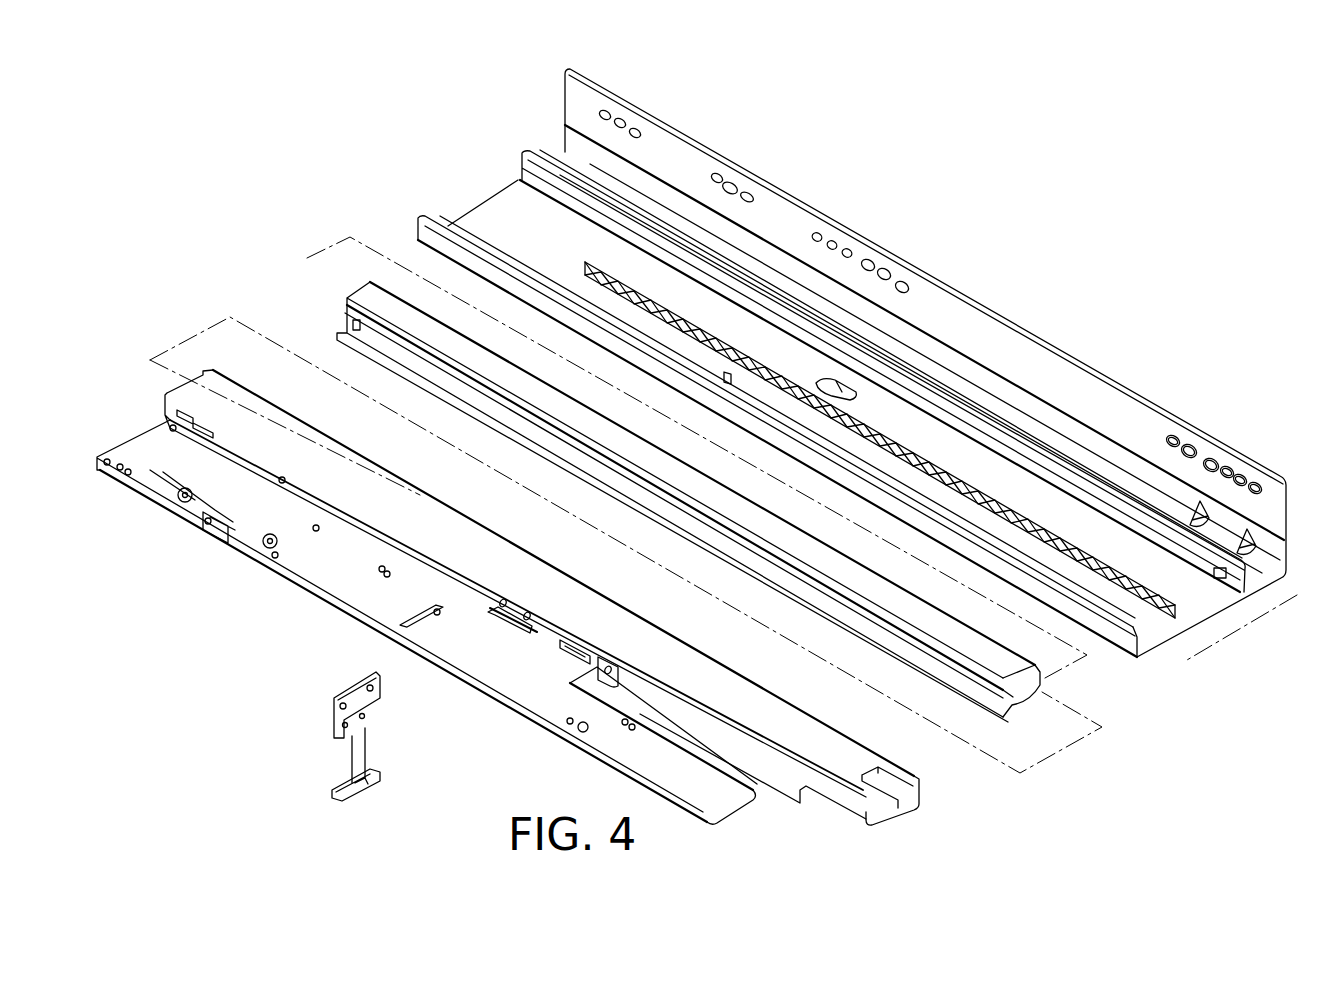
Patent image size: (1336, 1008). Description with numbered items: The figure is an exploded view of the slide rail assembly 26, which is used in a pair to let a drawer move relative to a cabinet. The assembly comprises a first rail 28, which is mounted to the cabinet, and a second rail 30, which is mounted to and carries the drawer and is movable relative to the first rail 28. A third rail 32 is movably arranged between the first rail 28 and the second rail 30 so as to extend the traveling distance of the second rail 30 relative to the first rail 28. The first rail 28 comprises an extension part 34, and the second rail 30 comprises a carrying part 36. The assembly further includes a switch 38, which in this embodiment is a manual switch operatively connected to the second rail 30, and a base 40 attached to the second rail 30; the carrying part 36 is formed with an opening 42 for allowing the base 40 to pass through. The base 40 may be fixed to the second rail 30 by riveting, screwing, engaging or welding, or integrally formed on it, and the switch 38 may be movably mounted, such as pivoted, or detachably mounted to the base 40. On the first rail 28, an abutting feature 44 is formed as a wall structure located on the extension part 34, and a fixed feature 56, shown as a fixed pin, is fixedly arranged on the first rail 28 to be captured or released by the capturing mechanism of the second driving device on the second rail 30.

The slide rail assembly 26 is at (252, 162).
The first rail 28 is at (771, 161).
The second rail 30 is at (895, 816).
The third rail 32 is at (1015, 663).
The extension part 34 is at (994, 462).
The carrying part 36 is at (523, 686).
The switch 38 is at (360, 787).
The base 40 is at (358, 692).
The opening 42 is at (518, 614).
The abutting feature 44 is at (846, 392).
The fixed feature 56 is at (728, 374).